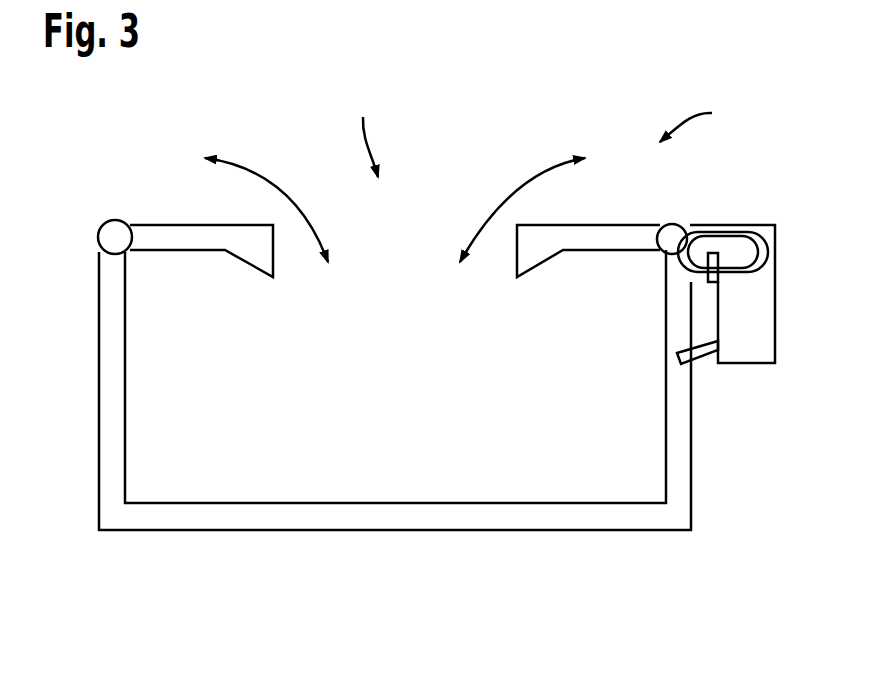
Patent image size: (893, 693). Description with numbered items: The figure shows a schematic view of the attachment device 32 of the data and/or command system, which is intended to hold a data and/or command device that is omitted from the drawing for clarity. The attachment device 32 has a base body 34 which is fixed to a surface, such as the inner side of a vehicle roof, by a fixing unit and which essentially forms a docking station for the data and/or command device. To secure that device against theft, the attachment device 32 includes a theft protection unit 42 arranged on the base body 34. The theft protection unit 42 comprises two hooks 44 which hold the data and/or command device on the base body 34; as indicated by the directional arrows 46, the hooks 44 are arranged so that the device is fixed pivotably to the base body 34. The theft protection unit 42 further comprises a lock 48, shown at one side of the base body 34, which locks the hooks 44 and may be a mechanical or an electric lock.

The attachment device 32 is at (701, 115).
The base body 34 is at (602, 520).
The theft protection unit 42 is at (367, 132).
The hooks 44 is at (240, 240).
The directional arrows 46 is at (295, 202).
The lock 48 is at (738, 247).